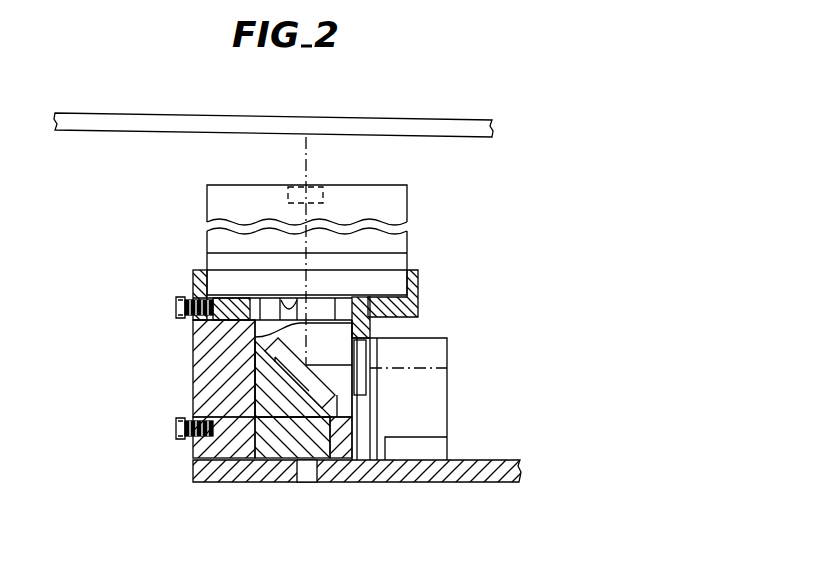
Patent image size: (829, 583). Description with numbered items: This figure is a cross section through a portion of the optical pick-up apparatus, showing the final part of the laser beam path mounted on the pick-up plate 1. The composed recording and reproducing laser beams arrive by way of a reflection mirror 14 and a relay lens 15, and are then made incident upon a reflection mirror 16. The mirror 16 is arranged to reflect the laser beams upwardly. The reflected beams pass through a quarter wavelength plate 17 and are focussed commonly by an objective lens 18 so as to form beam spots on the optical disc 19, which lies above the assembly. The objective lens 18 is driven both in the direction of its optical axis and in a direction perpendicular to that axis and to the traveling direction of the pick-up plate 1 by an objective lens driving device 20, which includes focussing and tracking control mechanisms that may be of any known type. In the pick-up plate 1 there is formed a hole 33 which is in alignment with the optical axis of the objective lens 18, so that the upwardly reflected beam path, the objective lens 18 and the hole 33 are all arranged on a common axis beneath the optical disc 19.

The pick-up plate 1 is at (473, 483).
The reflection mirror 14 is at (442, 338).
The relay lens 15 is at (357, 395).
The reflection mirror 16 is at (306, 418).
The quarter wavelength plate 17 is at (255, 337).
The objective lens 18 is at (290, 188).
The optical disc 19 is at (459, 118).
The objective lens driving device 20 is at (407, 195).
The hole 33 is at (303, 461).